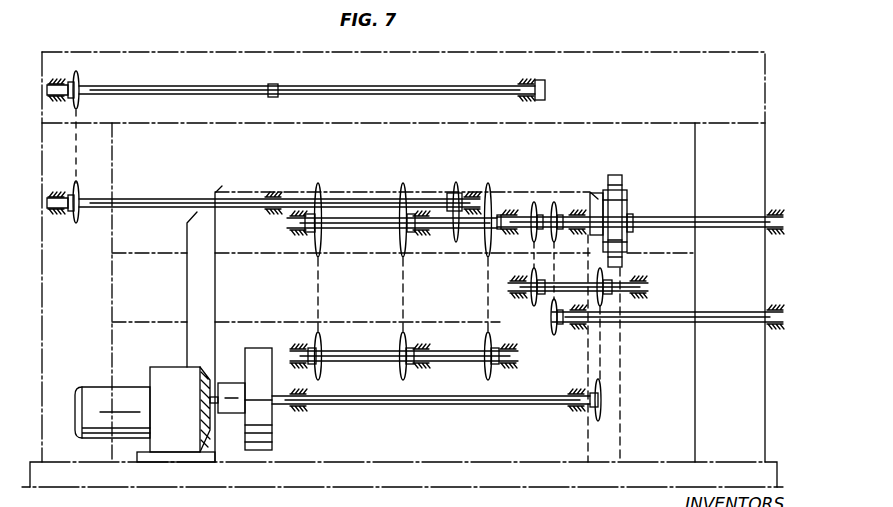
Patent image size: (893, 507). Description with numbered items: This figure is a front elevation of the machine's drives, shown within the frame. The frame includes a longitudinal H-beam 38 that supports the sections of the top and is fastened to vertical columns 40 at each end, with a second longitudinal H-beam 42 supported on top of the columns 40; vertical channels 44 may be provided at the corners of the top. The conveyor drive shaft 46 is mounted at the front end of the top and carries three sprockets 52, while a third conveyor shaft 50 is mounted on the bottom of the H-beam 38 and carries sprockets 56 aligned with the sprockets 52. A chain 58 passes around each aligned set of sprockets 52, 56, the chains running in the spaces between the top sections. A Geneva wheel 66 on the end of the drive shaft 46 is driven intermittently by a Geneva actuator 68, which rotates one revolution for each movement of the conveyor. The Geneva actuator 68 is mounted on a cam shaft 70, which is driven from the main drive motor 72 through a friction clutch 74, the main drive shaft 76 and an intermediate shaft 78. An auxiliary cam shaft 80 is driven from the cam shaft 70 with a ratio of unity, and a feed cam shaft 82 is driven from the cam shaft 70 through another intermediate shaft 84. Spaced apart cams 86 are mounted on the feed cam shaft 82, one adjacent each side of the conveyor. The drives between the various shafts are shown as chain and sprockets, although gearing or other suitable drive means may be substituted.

The longitudinal H-beam 38 is at (145, 265).
The vertical columns 40 is at (757, 163).
The second longitudinal H-beam 42 is at (635, 60).
The vertical channels 44 is at (195, 343).
The conveyor drive shaft 46 is at (371, 228).
The third conveyor shaft 50 is at (362, 353).
The sprockets 52 is at (321, 247).
The sprockets 56 is at (321, 372).
The chain 58 is at (316, 296).
The Geneva wheel 66 is at (615, 175).
The Geneva actuator 68 is at (628, 203).
The cam shaft 70 is at (712, 215).
The main drive motor 72 is at (127, 392).
The friction clutch 74 is at (270, 435).
The main drive shaft 76 is at (392, 404).
The intermediate shaft 78 is at (570, 284).
The auxiliary cam shaft 80 is at (658, 322).
The feed cam shaft 82 is at (206, 89).
The intermediate shaft 84 is at (160, 199).
The cams 86 is at (270, 84).